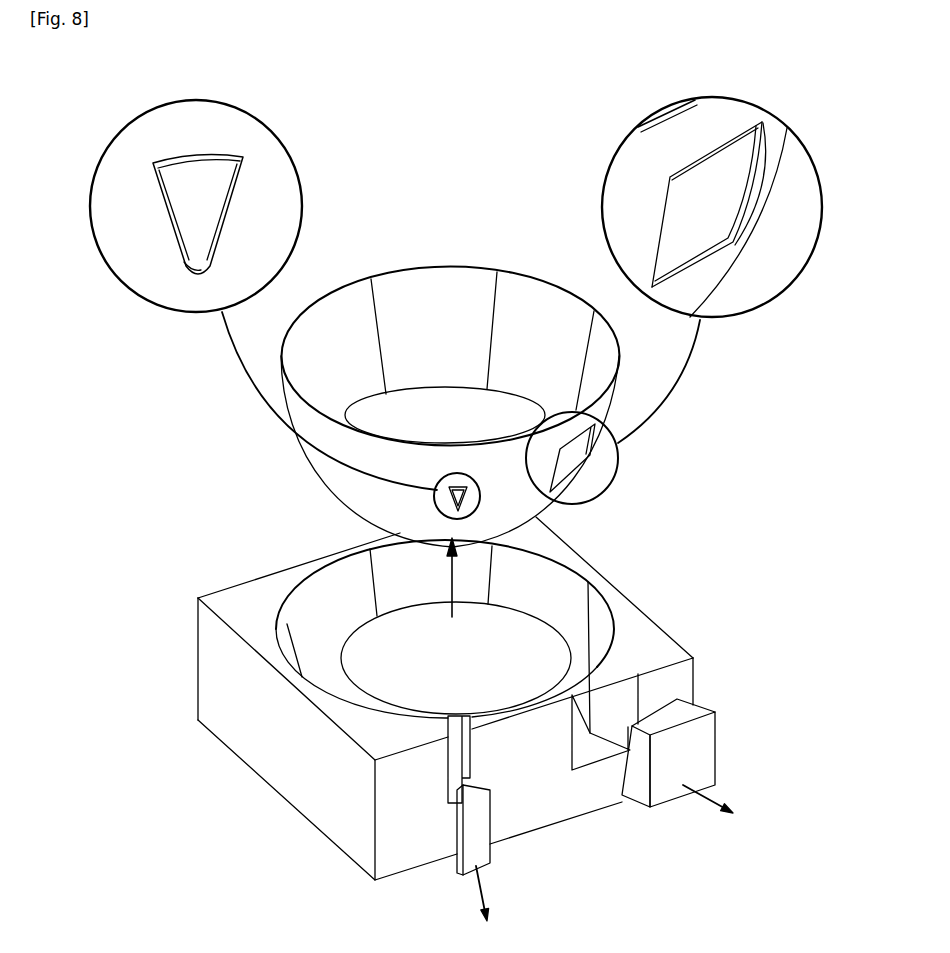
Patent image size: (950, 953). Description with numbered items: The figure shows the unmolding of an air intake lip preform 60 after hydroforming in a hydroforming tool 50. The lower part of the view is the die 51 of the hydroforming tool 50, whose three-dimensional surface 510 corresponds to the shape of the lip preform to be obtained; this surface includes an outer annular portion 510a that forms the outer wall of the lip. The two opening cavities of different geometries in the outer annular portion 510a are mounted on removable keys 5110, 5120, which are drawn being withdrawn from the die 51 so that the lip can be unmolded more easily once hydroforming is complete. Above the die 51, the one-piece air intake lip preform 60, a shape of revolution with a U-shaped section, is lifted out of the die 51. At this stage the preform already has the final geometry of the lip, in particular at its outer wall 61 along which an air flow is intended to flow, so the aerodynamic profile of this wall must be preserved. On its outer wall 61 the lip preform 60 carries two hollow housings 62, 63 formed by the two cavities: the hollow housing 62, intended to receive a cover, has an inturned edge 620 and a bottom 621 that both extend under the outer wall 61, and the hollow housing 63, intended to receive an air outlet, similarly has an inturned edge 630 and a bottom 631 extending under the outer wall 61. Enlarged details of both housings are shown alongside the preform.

The hydroforming tool 50 is at (622, 553).
The die 51 is at (305, 798).
The three-dimensional surface 510 is at (602, 670).
The outer annular portion 510a is at (317, 603).
The removable key 5110 is at (695, 757).
The removable key 5120 is at (484, 850).
The air intake lip preform 60 is at (520, 253).
The outer wall 61 is at (327, 466).
The hollow housing 62 is at (604, 458).
The inturned edge 620 is at (753, 203).
The bottom 621 is at (706, 183).
The hollow housing 63 is at (438, 482).
The inturned edge 630 is at (229, 206).
The bottom 631 is at (190, 241).